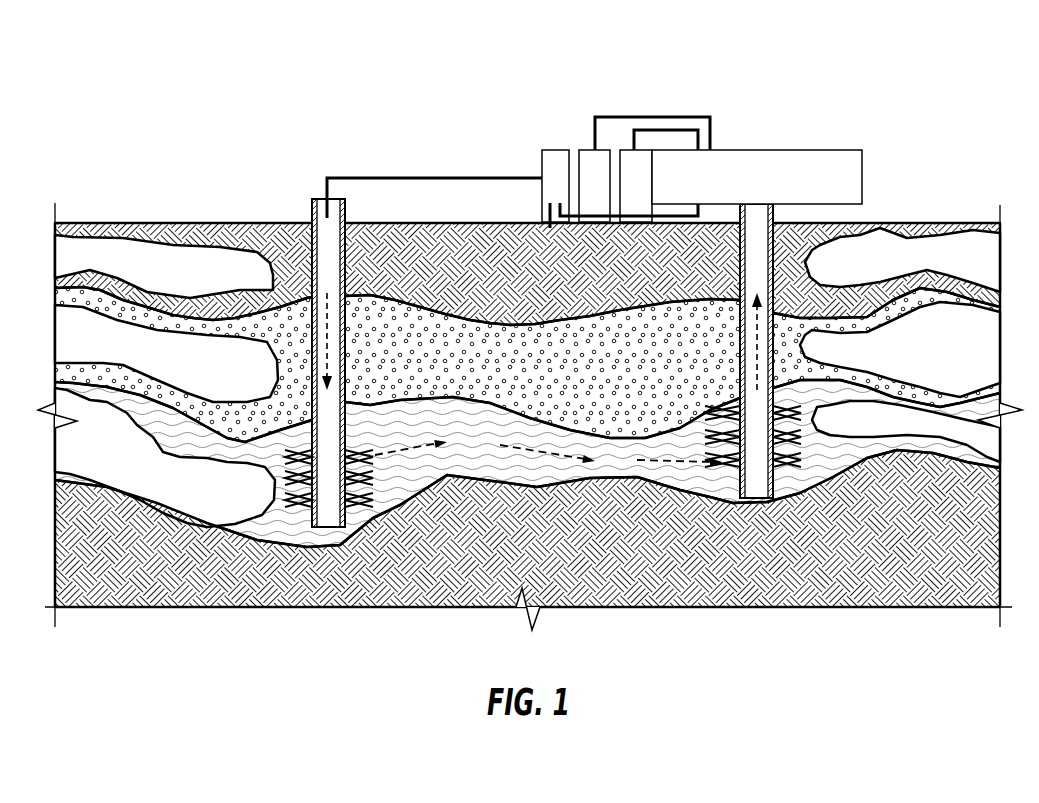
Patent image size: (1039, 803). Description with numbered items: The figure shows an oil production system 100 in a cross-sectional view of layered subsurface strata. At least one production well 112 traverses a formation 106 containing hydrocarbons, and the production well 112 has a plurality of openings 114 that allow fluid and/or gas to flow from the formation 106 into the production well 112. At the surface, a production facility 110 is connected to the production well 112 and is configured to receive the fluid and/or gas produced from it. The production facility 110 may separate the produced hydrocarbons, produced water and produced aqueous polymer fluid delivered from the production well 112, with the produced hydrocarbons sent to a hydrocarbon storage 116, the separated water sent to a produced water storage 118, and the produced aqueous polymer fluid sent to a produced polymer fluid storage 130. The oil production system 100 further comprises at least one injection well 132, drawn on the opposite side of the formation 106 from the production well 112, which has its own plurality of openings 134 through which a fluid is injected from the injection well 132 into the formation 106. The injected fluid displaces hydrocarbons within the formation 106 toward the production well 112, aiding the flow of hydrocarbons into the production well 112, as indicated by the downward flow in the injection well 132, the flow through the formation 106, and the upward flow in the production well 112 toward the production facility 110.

The oil production system 100 is at (152, 95).
The formation 106 is at (790, 362).
The production facility 110 is at (778, 189).
The production well 112 is at (786, 432).
The plurality of openings 114 is at (782, 462).
The hydrocarbon storage 116 is at (642, 165).
The produced water storage 118 is at (588, 165).
The produced polymer fluid storage 130 is at (557, 152).
The injection well 132 is at (382, 420).
The plurality of openings 134 is at (305, 500).